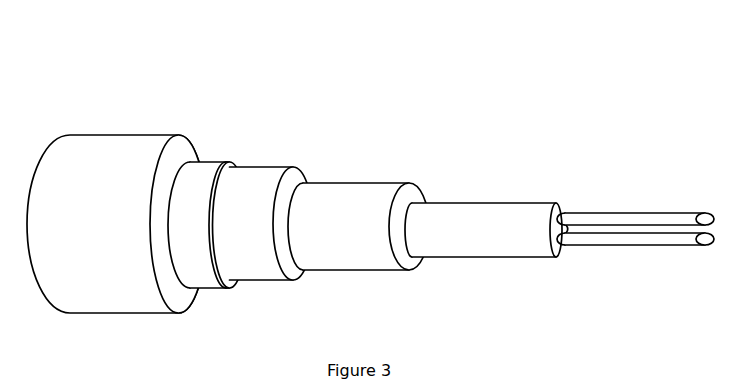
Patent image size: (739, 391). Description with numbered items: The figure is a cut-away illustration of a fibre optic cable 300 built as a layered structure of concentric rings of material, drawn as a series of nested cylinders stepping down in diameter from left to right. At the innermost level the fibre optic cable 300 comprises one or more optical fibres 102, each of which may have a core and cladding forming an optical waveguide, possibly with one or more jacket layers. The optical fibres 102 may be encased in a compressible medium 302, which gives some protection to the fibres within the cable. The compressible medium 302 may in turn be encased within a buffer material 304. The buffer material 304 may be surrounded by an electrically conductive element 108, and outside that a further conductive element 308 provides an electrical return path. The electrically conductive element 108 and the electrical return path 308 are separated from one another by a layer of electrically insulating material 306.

The fibre optic cable 300 is at (563, 80).
The further conductive element 308 is at (138, 145).
The layer of electrically insulating material 306 is at (200, 167).
The electrically conductive element 108 is at (253, 173).
The buffer material 304 is at (352, 188).
The compressible medium 302 is at (477, 210).
The optical fibres 102 is at (640, 215).